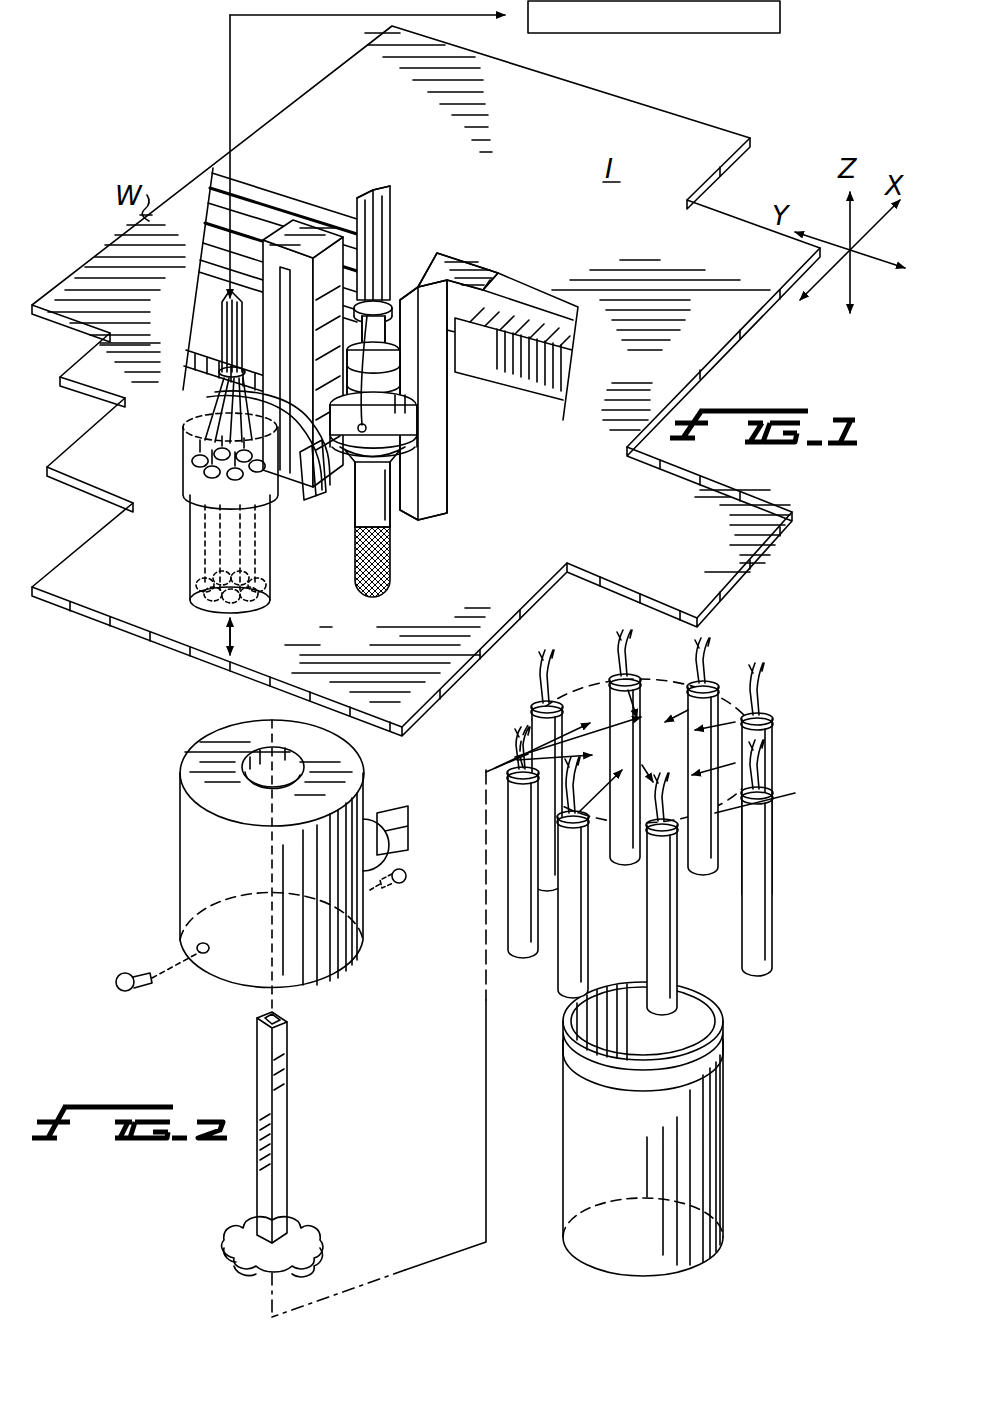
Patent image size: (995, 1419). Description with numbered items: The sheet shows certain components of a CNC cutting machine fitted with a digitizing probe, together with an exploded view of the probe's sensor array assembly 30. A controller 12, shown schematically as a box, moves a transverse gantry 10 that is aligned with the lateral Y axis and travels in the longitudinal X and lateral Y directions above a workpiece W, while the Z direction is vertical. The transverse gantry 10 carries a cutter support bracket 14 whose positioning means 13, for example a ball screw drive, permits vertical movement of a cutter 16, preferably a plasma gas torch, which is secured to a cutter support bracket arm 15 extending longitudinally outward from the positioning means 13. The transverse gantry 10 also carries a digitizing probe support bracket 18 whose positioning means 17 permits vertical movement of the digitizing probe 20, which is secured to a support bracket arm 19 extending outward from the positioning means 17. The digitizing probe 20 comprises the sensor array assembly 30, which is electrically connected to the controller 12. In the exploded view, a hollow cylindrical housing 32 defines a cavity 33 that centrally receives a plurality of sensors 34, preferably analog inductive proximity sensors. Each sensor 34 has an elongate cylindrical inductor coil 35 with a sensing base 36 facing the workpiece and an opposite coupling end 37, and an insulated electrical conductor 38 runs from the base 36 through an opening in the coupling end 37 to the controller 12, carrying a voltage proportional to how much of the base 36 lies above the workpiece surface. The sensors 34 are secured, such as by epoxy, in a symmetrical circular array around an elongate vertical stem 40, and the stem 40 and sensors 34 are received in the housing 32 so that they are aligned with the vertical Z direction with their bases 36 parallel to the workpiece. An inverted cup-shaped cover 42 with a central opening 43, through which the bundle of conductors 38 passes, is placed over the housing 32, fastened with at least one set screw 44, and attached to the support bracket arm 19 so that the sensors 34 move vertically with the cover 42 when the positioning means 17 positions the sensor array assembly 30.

In FIG. 1, the transverse gantry 10 is at (263, 197).
In FIG. 1, the controller 12 is at (735, 36).
In FIG. 1, the positioning means 13 is at (438, 402).
In FIG. 1, the cutter support bracket 14 is at (462, 262).
In FIG. 1, the cutter support bracket arm 15 is at (400, 345).
In FIG. 1, the cutter 16 is at (353, 525).
In FIG. 1, the positioning means 17 is at (257, 277).
In FIG. 1, the digitizing probe support bracket 18 is at (333, 213).
In FIG. 1, the support bracket arm 19 is at (318, 480).
In FIG. 2, the support bracket arm 19 is at (385, 822).
In FIG. 1, the digitizing probe 20 is at (183, 556).
In FIG. 2, the sensor array assembly 30 is at (117, 848).
In FIG. 2, the housing 32 is at (723, 1125).
In FIG. 2, the cavity 33 is at (685, 1032).
In FIG. 2, the sensors 34 is at (690, 895).
In FIG. 2, the inductor coil 35 is at (568, 925).
In FIG. 2, the base 36 is at (755, 968).
In FIG. 2, the coupling end 37 is at (765, 710).
In FIG. 1, the electrical conductor 38 is at (215, 378).
In FIG. 2, the electrical conductor 38 is at (747, 680).
In FIG. 2, the stem 40 is at (288, 1145).
In FIG. 2, the cover 42 is at (315, 992).
In FIG. 2, the central opening 43 is at (260, 757).
In FIG. 2, the set screw 44 is at (130, 970).